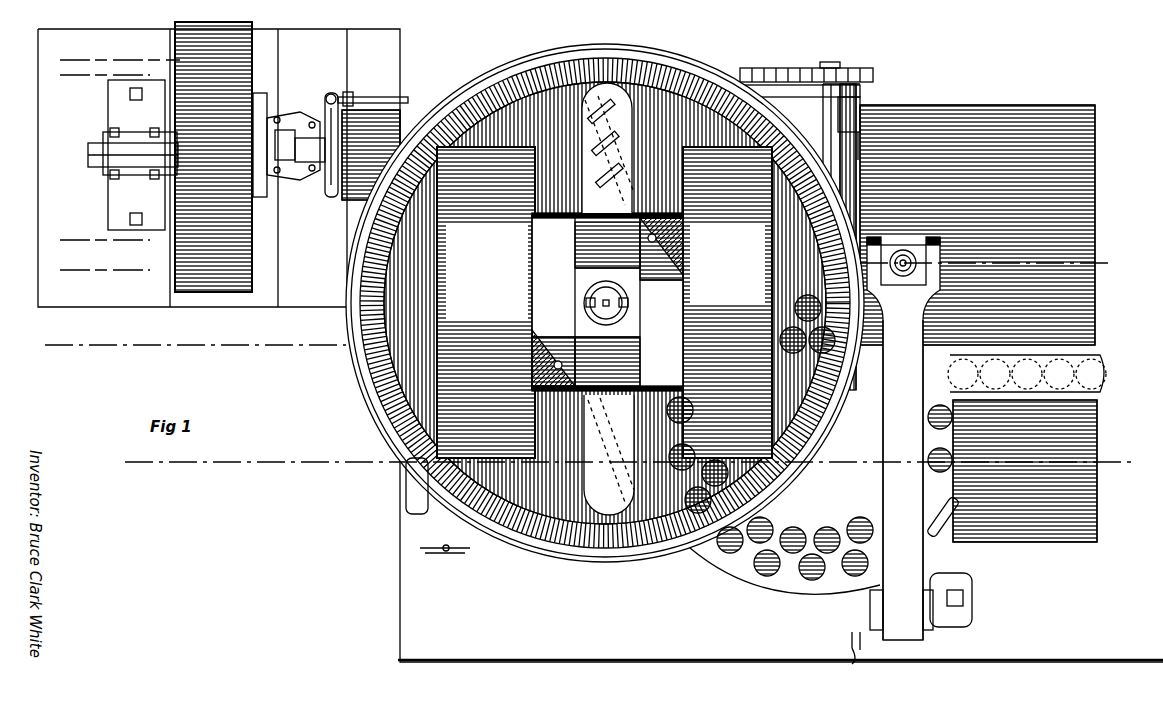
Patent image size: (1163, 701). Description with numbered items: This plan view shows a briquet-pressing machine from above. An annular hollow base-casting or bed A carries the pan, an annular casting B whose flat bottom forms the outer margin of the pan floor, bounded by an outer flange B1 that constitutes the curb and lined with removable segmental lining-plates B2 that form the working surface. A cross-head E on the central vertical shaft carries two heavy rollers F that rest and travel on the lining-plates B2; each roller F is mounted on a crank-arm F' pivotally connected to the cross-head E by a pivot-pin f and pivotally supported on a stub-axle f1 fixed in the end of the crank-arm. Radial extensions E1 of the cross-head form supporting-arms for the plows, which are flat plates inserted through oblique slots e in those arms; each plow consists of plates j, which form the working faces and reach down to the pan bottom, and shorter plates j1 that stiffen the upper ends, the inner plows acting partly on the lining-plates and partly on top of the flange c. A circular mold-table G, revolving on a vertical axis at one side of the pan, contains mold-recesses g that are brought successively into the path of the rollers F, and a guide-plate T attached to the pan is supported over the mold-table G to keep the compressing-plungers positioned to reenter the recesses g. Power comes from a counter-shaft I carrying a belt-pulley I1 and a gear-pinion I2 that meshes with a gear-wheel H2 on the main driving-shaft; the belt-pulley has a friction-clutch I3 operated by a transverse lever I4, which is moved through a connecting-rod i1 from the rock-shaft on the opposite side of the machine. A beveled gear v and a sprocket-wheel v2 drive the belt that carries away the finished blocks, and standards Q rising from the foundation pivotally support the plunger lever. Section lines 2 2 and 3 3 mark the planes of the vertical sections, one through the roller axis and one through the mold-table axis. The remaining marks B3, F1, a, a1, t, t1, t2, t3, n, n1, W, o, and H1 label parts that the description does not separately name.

The counter-shaft I is at (92, 158).
The belt-pulley I1 is at (218, 294).
The gear-pinion I2 is at (600, 345).
The friction-clutch I3 is at (300, 125).
The transverse lever I4 is at (340, 100).
The connecting-rod i1 is at (390, 99).
The base-casting A is at (404, 488).
The annular casting B is at (560, 470).
The outer flange B1 is at (470, 486).
The lining-plates B2 is at (645, 200).
The bolt B3 is at (446, 551).
The rollers F is at (727, 302).
The crank-arms F' is at (486, 302).
The armature block F1 is at (607, 302).
The cross-head E is at (629, 309).
The supporting-arms E1 is at (630, 102).
The oblique slots e is at (611, 296).
The pin a is at (604, 322).
The keys a1 is at (600, 298).
The plow plates j is at (584, 118).
The stiffening plates j1 is at (642, 440).
The stub-axles f1 is at (626, 60).
The pivot-pins f is at (646, 67).
The flange c is at (566, 500).
The mold-recesses g is at (720, 478).
The mold-table G is at (862, 512).
The guide-plate T is at (862, 396).
The bracket t is at (850, 100).
The chain t1 is at (760, 57).
The hook t2 is at (854, 664).
The pin t3 is at (862, 158).
The beveled gear v is at (1104, 354).
The sprocket-wheel v2 is at (860, 150).
The fork n is at (910, 252).
The pivot n1 is at (905, 278).
The arm W is at (903, 480).
The lever o is at (872, 492).
The standards Q is at (934, 616).
The bracket H1 is at (1013, 513).
The gear-wheel H2 is at (358, 438).
The section line 2 is at (578, 310).
The section line 3 is at (619, 465).